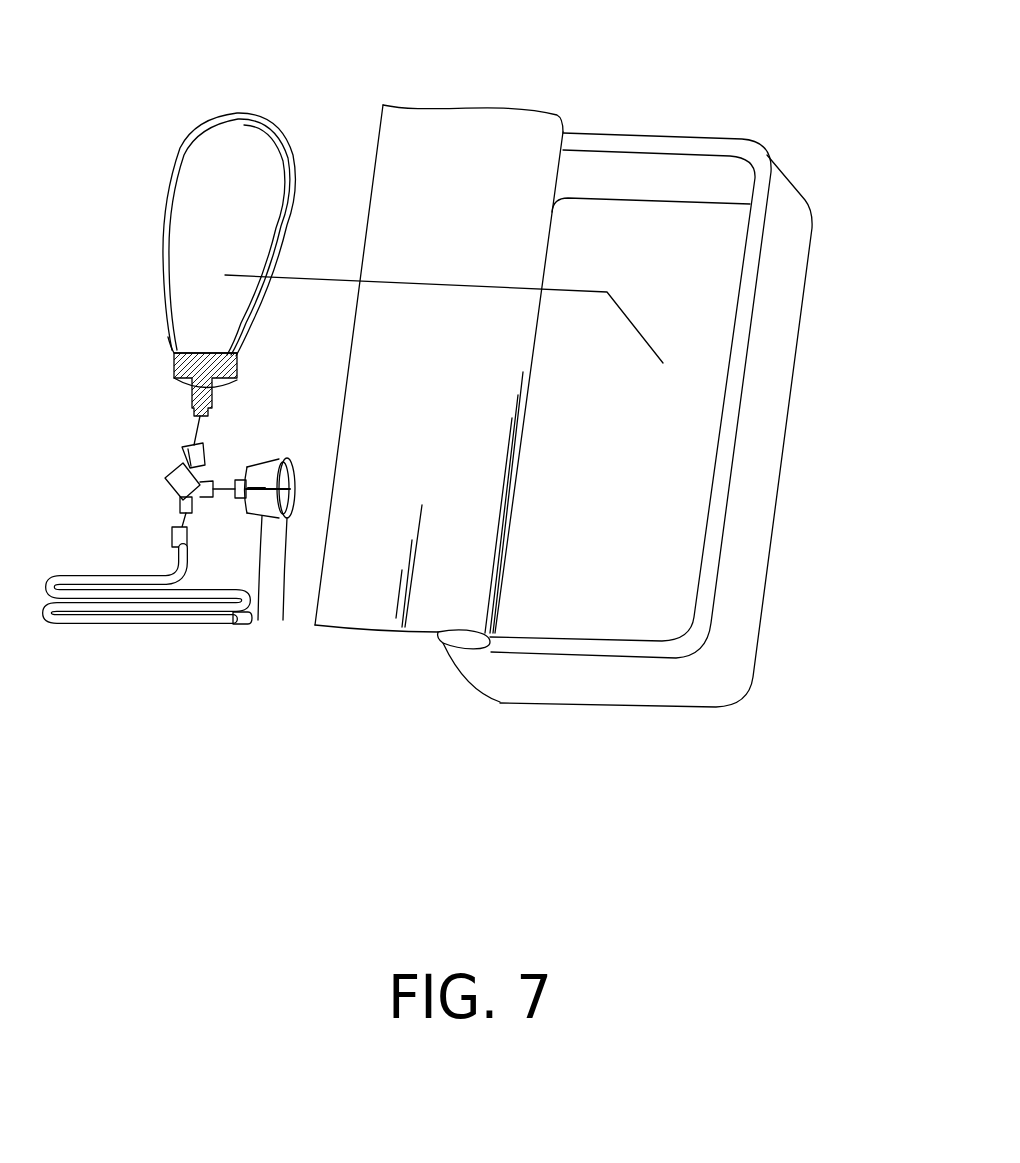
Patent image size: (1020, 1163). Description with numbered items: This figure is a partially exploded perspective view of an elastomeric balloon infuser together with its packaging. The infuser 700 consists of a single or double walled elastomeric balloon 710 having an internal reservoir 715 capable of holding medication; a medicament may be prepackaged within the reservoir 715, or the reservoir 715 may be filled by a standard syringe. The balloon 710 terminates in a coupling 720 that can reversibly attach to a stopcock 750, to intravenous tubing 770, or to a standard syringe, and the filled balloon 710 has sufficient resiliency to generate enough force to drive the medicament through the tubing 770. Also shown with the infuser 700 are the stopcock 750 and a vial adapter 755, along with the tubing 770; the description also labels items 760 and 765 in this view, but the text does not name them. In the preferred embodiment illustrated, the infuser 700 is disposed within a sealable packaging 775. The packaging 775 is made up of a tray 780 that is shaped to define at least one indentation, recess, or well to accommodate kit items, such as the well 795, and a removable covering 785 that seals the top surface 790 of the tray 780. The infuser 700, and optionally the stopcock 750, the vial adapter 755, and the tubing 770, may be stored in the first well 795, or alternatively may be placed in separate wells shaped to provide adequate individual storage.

The infuser 700 is at (283, 95).
The elastomeric balloon 710 is at (167, 303).
The internal reservoir 715 is at (175, 328).
The coupling 720 is at (193, 408).
The stopcock 750 is at (187, 470).
The vial adapter 755 is at (258, 620).
The tubing 760 is at (283, 620).
The connector cup 765 is at (277, 462).
The intravenous tubing 770 is at (143, 575).
The sealable packaging 775 is at (493, 72).
The tray 780 is at (752, 152).
The removable covering 785 is at (433, 620).
The top surface 790 is at (560, 650).
The well 795 is at (598, 217).